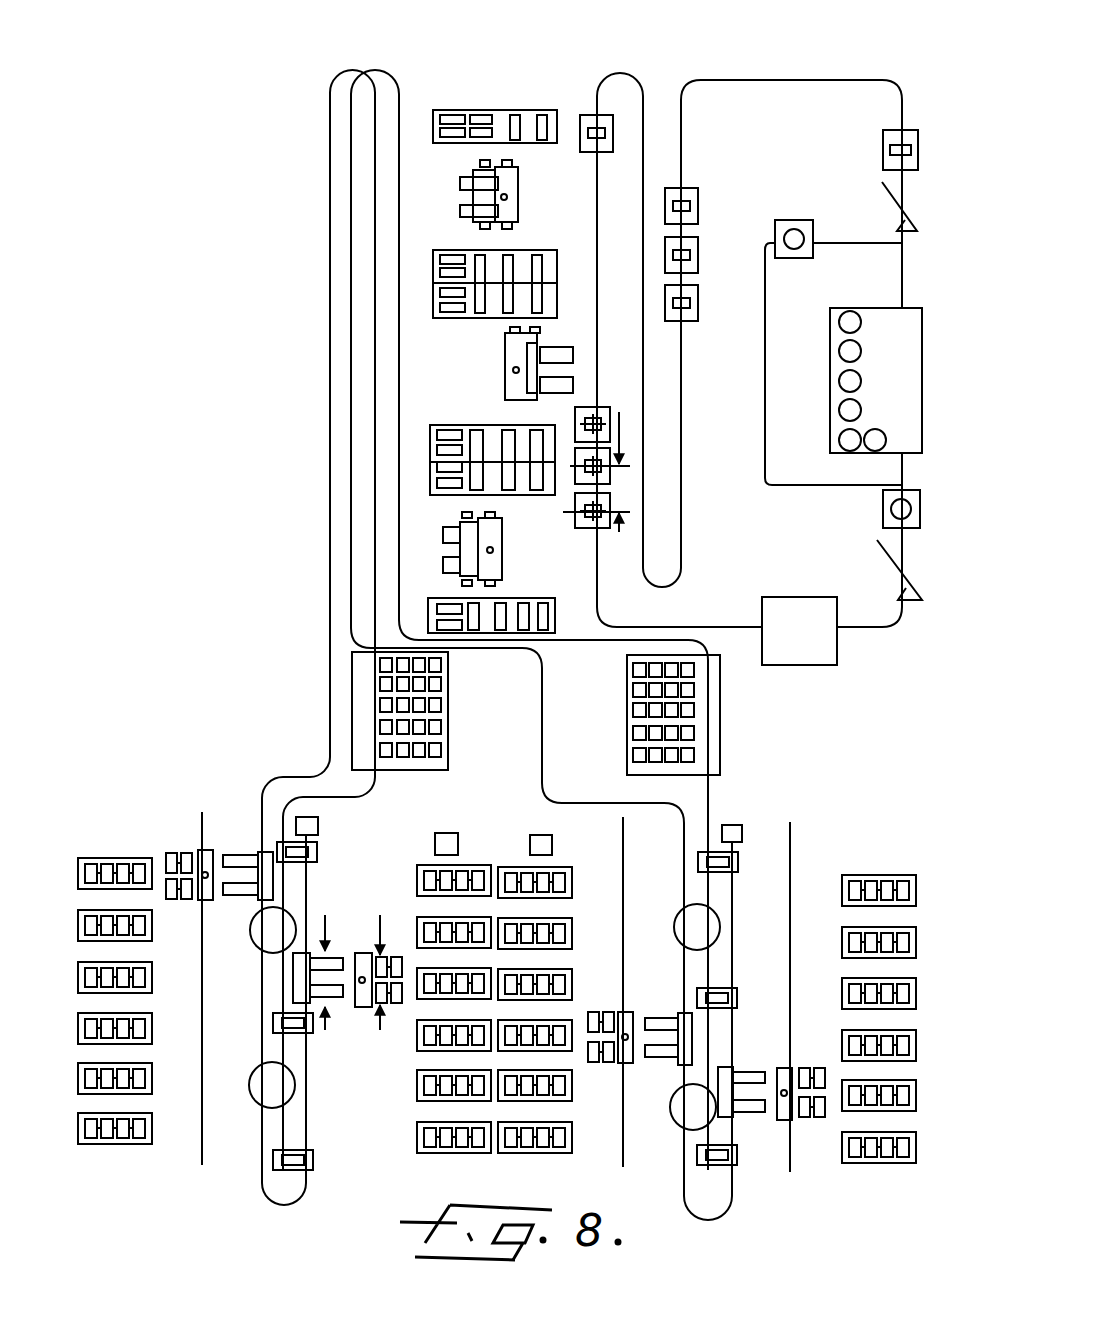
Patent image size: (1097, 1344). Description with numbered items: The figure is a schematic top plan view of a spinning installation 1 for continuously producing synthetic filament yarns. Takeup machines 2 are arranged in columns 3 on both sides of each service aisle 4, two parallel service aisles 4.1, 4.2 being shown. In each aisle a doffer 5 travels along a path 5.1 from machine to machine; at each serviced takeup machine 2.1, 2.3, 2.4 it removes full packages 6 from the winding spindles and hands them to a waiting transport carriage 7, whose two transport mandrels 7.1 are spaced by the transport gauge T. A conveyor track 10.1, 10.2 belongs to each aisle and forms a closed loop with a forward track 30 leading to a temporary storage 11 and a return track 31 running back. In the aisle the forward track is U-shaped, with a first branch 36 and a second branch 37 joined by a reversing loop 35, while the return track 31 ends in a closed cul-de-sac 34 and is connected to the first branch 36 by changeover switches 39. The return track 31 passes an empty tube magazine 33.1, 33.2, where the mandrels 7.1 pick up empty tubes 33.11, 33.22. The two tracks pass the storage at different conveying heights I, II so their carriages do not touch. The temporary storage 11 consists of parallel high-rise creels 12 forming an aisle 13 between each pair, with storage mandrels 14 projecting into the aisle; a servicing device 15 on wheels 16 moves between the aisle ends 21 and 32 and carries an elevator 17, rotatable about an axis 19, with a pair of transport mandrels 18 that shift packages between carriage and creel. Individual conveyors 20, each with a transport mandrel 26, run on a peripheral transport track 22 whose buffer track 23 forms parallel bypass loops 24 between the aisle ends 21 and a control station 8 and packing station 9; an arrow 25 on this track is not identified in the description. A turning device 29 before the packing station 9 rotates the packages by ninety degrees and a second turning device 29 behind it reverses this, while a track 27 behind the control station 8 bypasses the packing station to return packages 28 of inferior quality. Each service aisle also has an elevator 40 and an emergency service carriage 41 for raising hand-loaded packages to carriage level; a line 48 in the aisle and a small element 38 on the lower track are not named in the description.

The spinning installation 1 is at (246, 268).
The takeup machines 2 is at (870, 875).
The contacted and serviced takeup machine 2.1 is at (118, 858).
The contacted and serviced takeup machine 2.3 is at (555, 1020).
The contacted and serviced takeup machine 2.4 is at (848, 1112).
The column 3 is at (817, 890).
The service aisle 4 is at (612, 1052).
The service aisle 4.1 is at (762, 888).
The service aisle 4.2 is at (238, 833).
The doffer 5 is at (205, 900).
The path 5.1 is at (200, 828).
The full packages 6 is at (800, 1068).
The transport carriage 7 is at (680, 1013).
The transport mandrel 7.1 is at (745, 1050).
The control station 8 is at (797, 610).
The packing station 9 is at (877, 320).
The conveyor track 10.1 is at (550, 723).
The conveyor track 10.2 is at (308, 773).
The temporary storage 11 is at (425, 352).
The high-rise creels 12 is at (529, 118).
The aisle 13 is at (562, 240).
The storage mandrels 14 is at (513, 125).
The servicing device 15 is at (478, 198).
The wheels 16 is at (554, 159).
The elevator 17 is at (505, 183).
The transport mandrels 18 is at (470, 213).
The axis 19 is at (540, 348).
The individual conveyors 20 is at (613, 128).
The end of aisle 21 is at (522, 566).
The peripheral transport track 22 is at (483, 704).
The buffer track 23 is at (663, 86).
The bypass loops 24 is at (682, 432).
The conveying direction 25 is at (665, 615).
The transport mandrel 26 is at (683, 200).
The bypass track 27 is at (763, 393).
The packages of inferior quality 28 is at (803, 262).
The turning device 29 is at (883, 184).
The forward track 30 is at (308, 890).
The return track 31 is at (373, 533).
The front side of aisle 32 is at (413, 458).
The empty tube magazine 33.1 is at (715, 715).
The empty tubes 33.11 is at (693, 735).
The empty tube magazine 33.2 is at (442, 724).
The empty tubes 33.22 is at (436, 752).
The cul-de-sac 34 is at (280, 1048).
The reversing loop 35 is at (303, 1205).
The first branch 36 is at (258, 978).
The second branch 37 is at (306, 1122).
The stop 38 is at (313, 1160).
The changeover switches 39 is at (255, 1106).
The elevator 40 is at (746, 797).
The emergency service carriage 41 is at (440, 840).
The guide line 48 is at (625, 1042).
The conveying height I is at (330, 597).
The conveying height II is at (350, 328).
The transport gauge T is at (407, 1033).